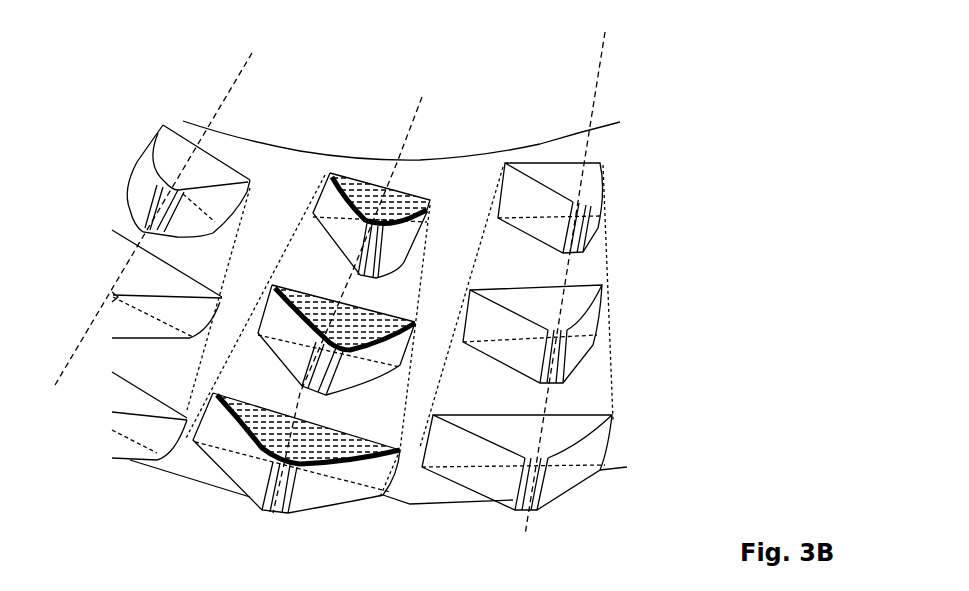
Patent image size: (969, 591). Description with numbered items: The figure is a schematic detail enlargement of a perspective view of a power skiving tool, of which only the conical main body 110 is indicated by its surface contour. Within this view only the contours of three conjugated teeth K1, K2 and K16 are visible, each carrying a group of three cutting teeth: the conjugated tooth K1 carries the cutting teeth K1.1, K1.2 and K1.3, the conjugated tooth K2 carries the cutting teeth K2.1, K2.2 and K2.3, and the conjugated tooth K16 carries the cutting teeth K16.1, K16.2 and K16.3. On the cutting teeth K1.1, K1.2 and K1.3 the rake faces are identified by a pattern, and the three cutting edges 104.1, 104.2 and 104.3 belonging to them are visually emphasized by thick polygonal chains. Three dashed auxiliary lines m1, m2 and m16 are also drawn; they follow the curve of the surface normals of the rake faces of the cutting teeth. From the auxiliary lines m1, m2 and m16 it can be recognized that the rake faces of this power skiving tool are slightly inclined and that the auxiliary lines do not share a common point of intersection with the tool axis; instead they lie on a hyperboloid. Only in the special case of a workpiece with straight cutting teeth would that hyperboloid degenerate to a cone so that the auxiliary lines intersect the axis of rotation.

The conical main body 110 is at (607, 121).
The dashed auxiliary line m16 is at (173, 209).
The dashed auxiliary line m1 is at (359, 293).
The dashed auxiliary line m2 is at (580, 267).
The conjugated tooth K16 is at (150, 336).
The cutting tooth K16.1 is at (224, 203).
The cutting tooth K16.2 is at (150, 327).
The cutting tooth K16.3 is at (117, 443).
The conjugated tooth K1 is at (307, 366).
The cutting tooth K1.1 is at (397, 235).
The cutting tooth K1.2 is at (350, 363).
The cutting tooth K1.3 is at (318, 492).
The cutting edge 104.1 is at (348, 208).
The cutting edge 104.2 is at (292, 317).
The cutting edge 104.3 is at (237, 427).
The conjugated tooth K2 is at (516, 362).
The cutting tooth K2.1 is at (597, 210).
The cutting tooth K2.2 is at (580, 347).
The cutting tooth K2.3 is at (563, 477).